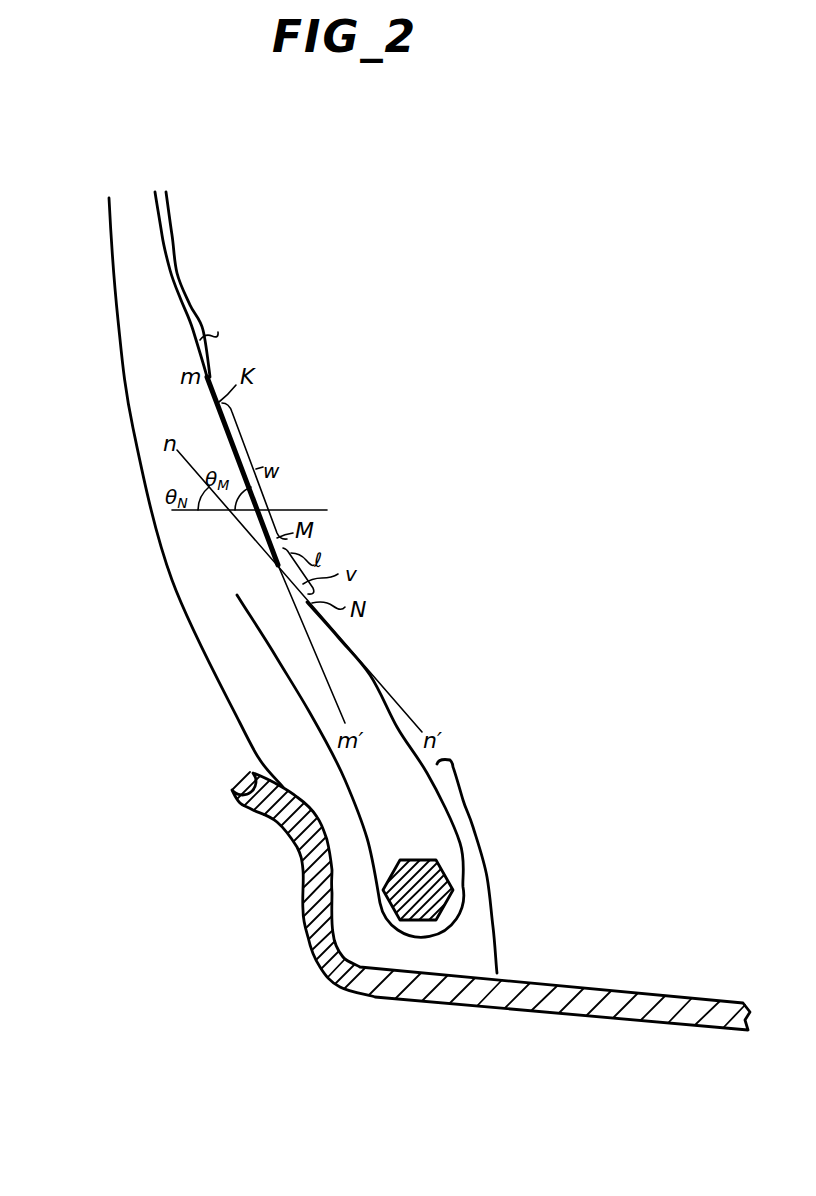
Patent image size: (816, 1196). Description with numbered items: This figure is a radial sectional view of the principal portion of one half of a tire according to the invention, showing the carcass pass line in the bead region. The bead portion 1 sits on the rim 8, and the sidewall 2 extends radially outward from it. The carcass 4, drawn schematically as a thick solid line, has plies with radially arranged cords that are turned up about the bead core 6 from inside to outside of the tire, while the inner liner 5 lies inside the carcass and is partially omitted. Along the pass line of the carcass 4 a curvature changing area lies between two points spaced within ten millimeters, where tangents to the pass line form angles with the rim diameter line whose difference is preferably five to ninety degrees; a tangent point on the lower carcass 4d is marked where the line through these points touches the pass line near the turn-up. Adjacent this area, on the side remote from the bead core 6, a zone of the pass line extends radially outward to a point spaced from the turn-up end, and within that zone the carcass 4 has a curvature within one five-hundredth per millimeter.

The bead portion 1 is at (243, 722).
The sidewall 2 is at (124, 359).
The carcass 4 is at (167, 275).
The bead filler lower portion 4d is at (372, 676).
The inner liner 5 is at (174, 225).
The bead core 6 is at (443, 895).
The rim 8 is at (582, 998).